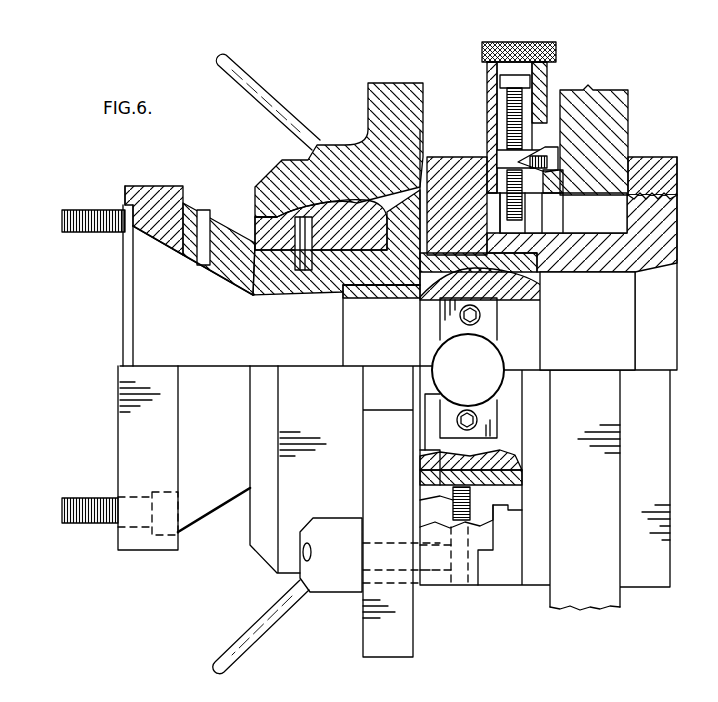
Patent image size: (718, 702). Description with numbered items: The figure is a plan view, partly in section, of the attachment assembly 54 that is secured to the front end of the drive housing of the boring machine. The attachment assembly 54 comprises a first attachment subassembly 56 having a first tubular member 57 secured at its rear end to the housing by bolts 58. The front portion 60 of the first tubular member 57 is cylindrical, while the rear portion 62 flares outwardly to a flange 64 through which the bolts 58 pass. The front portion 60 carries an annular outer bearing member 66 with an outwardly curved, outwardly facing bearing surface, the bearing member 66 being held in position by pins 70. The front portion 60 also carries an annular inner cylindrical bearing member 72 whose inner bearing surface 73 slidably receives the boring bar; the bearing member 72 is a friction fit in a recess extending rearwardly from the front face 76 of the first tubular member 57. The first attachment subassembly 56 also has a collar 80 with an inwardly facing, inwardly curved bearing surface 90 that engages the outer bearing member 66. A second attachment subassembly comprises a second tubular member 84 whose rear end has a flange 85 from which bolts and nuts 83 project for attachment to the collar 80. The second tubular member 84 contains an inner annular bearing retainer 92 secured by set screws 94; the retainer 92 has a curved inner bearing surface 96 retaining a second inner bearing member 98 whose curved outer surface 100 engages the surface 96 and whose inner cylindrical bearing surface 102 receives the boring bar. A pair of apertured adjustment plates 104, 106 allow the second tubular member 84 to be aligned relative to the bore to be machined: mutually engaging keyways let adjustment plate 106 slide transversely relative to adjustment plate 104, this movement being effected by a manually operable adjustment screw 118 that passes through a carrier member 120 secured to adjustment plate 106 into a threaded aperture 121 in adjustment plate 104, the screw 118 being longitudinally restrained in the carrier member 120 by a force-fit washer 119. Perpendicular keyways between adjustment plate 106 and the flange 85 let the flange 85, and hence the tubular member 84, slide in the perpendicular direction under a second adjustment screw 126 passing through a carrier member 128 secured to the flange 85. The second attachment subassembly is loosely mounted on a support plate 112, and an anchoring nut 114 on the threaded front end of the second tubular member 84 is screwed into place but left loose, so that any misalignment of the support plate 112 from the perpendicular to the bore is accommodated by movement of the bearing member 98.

The attachment assembly 54 is at (245, 572).
The first attachment subassembly 56 is at (190, 188).
The first tubular member 57 is at (216, 240).
The bolts 58 is at (90, 212).
The front portion 60 is at (236, 285).
The rear portion 62 is at (212, 502).
The flange 64 is at (148, 190).
The annular outer bearing member 66 is at (425, 212).
The pins 70 is at (290, 268).
The annular inner cylindrical bearing member 72 is at (402, 298).
The inner bearing surface 73 is at (370, 298).
The front face 76 is at (395, 285).
The collar 80 is at (258, 183).
The nuts 83 is at (312, 140).
The second tubular member 84 is at (598, 270).
The flange 85 is at (440, 588).
The inwardly curved bearing surface 90 is at (380, 213).
The inner annular bearing retainer 92 is at (560, 245).
The set screws 94 is at (440, 512).
The curved inner bearing surface 96 is at (545, 302).
The second inner bearing member 98 is at (548, 288).
The curved outer surface 100 is at (520, 265).
The inner cylindrical bearing surface 102 is at (508, 330).
The adjustment plate 104 is at (558, 150).
The adjustment plate 106 is at (503, 574).
The support plate 112 is at (623, 95).
The anchoring nut 114 is at (668, 170).
The adjustment screw 118 is at (482, 48).
The force-fit washer 119 is at (512, 84).
The carrier member 120 is at (490, 78).
The threaded aperture 121 is at (497, 158).
The adjustment screw 126 is at (492, 377).
The carrier member 128 is at (445, 335).